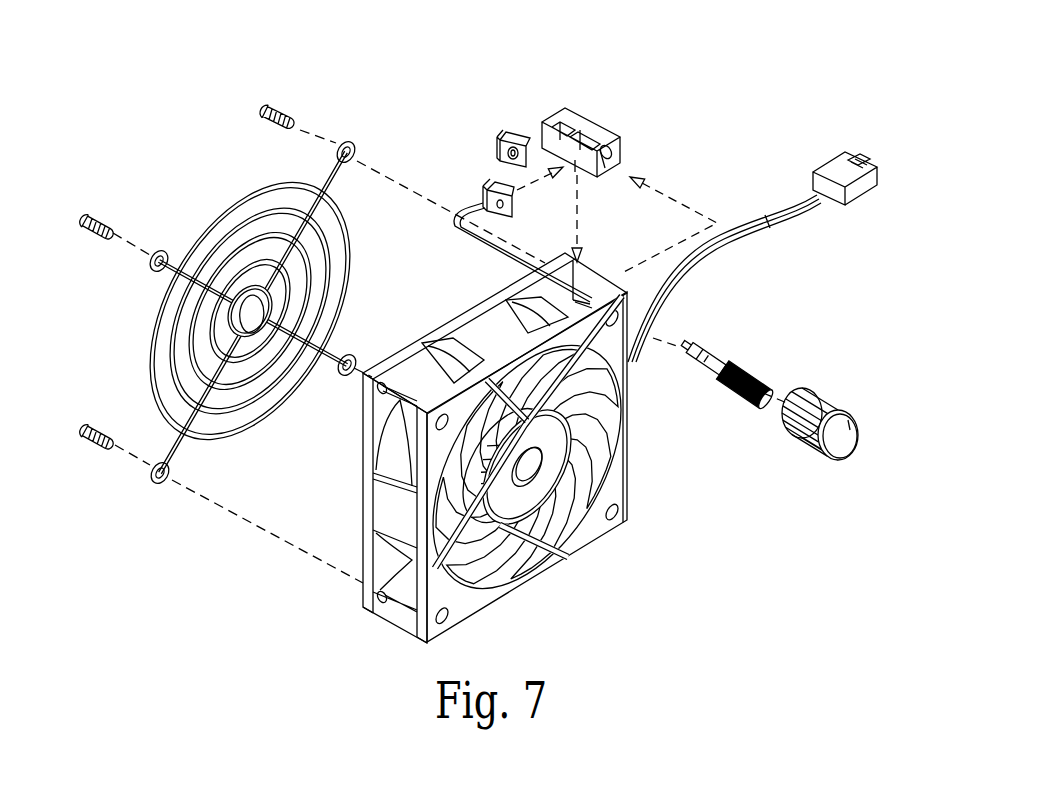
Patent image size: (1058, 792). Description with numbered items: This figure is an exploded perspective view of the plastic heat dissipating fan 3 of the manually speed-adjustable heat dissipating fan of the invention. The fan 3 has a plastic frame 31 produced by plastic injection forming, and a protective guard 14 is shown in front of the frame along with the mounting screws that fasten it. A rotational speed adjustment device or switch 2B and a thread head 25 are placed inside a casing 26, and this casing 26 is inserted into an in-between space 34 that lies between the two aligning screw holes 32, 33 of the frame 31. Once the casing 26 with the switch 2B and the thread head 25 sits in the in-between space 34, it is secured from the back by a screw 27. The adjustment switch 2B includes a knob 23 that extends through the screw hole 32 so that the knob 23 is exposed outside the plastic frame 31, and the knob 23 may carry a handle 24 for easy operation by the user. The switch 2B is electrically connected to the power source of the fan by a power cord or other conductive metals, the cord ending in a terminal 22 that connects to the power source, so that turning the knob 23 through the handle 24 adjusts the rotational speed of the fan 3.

The fan guard 14 is at (222, 222).
The screw 27 is at (270, 102).
The plastic heat dissipating fan 3 is at (424, 330).
The plastic frame 31 is at (460, 328).
The screw hole 32 is at (566, 278).
The screw hole 33 is at (623, 312).
The in-between space 34 is at (583, 293).
The rotational speed adjustment device or switch 2B is at (492, 185).
The thread head 25 is at (510, 128).
The casing 26 is at (590, 110).
The terminal 22 is at (828, 168).
The knob 23 is at (750, 370).
The handle 24 is at (837, 410).